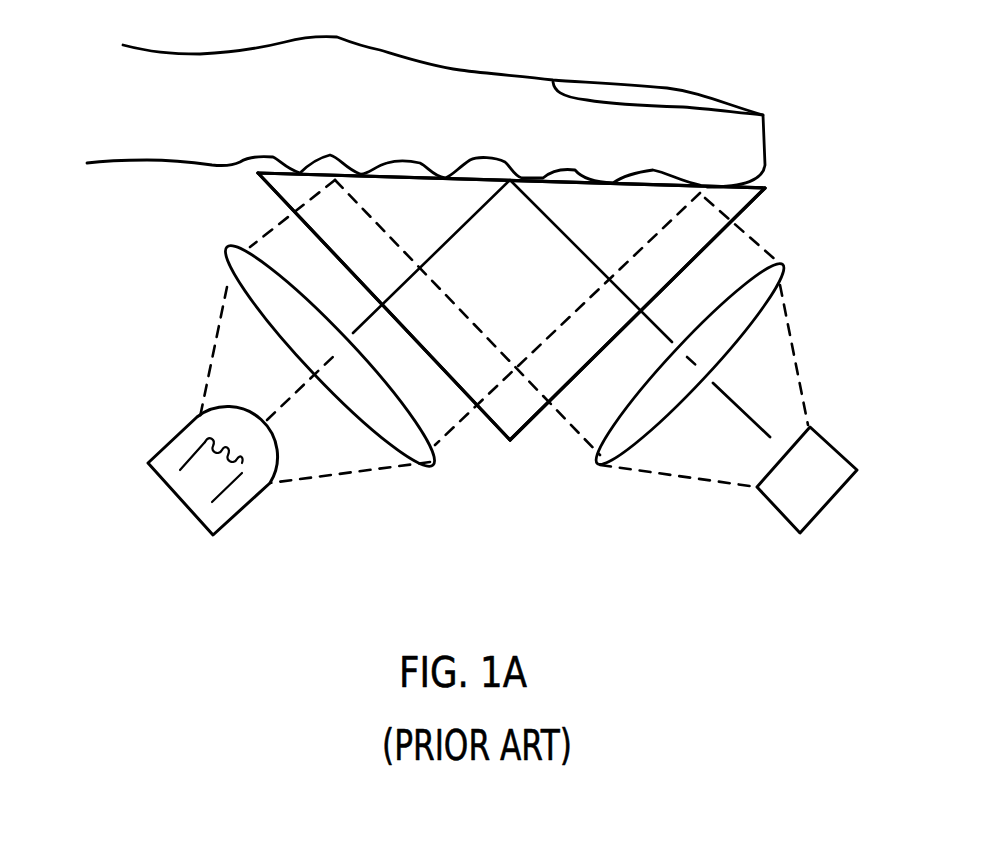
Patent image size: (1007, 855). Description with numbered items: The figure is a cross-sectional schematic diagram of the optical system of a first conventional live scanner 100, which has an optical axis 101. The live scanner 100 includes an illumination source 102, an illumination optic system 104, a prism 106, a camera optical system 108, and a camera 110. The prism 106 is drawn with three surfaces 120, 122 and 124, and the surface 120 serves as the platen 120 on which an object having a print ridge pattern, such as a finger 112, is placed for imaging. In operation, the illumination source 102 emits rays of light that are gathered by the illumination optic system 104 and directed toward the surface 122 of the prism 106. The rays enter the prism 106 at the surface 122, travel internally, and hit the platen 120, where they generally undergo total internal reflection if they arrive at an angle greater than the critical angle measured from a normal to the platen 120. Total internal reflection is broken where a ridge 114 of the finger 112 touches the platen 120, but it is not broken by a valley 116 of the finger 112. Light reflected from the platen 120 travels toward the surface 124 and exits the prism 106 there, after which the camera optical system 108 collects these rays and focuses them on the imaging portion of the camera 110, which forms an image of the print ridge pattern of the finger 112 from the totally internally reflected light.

The live scanner 100 is at (818, 163).
The optical axis 101 is at (748, 430).
The illumination source 102 is at (177, 502).
The illumination optic system 104 is at (223, 250).
The prism 106 is at (537, 267).
The camera optical system 108 is at (787, 272).
The camera 110 is at (837, 497).
The finger 112 is at (198, 133).
The ridge 114 is at (447, 175).
The valley 116 is at (503, 158).
The platen 120 is at (637, 185).
The surface 122 is at (280, 190).
The surface 124 is at (518, 437).